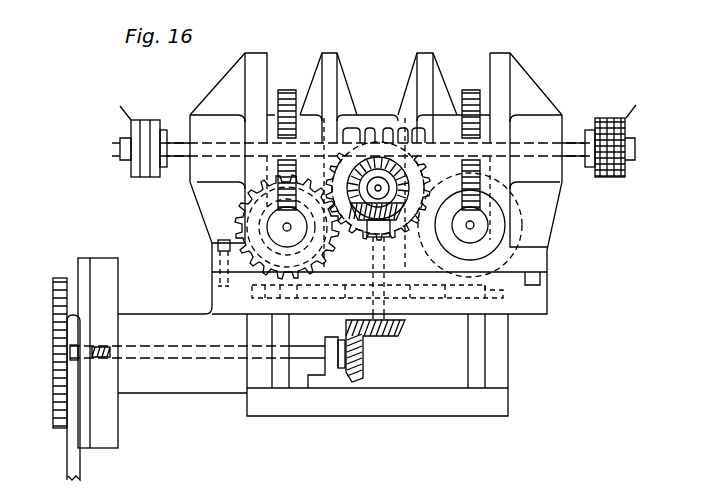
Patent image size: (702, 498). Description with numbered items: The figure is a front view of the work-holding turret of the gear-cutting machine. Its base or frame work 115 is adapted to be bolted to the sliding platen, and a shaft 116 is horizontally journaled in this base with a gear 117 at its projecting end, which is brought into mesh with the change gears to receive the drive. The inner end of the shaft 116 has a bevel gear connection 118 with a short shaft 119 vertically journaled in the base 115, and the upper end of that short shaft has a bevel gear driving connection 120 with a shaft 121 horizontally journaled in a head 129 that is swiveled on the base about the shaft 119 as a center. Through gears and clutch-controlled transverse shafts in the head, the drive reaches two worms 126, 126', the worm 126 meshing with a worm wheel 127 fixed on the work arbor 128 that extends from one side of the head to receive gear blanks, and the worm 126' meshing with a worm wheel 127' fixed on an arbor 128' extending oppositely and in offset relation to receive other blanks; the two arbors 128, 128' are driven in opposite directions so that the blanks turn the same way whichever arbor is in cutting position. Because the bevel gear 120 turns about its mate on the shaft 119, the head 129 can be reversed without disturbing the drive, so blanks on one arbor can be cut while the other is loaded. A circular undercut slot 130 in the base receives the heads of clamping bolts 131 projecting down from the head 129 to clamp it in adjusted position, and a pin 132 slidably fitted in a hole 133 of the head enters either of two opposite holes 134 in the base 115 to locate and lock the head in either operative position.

The base or frame work 115 is at (240, 393).
The shaft 116 is at (160, 360).
The gear 117 is at (54, 280).
The bevel gear connection 118 is at (362, 337).
The short shaft 119 is at (384, 302).
The bevel gear driving connection 120 is at (390, 230).
The shaft 121 is at (370, 240).
The worm 126 is at (273, 227).
The worm 126' is at (488, 225).
The worm wheel 127 is at (292, 138).
The worm wheel 127' is at (473, 138).
The work arbor 128 is at (165, 136).
The arbor 128' is at (591, 134).
The head 129 is at (548, 258).
The circular undercut slot 130 is at (505, 292).
The clamping bolts 131 is at (490, 290).
The pin 132 is at (218, 243).
The hole 133 is at (218, 268).
The holes 134 is at (220, 282).